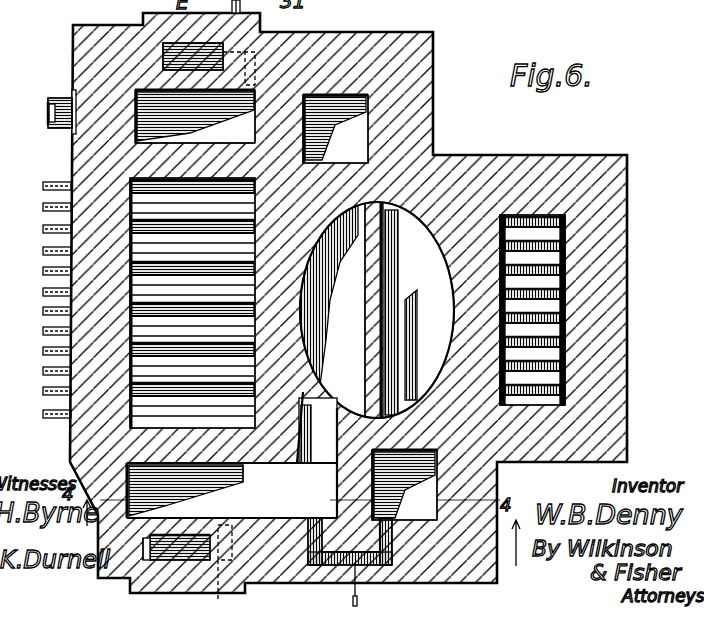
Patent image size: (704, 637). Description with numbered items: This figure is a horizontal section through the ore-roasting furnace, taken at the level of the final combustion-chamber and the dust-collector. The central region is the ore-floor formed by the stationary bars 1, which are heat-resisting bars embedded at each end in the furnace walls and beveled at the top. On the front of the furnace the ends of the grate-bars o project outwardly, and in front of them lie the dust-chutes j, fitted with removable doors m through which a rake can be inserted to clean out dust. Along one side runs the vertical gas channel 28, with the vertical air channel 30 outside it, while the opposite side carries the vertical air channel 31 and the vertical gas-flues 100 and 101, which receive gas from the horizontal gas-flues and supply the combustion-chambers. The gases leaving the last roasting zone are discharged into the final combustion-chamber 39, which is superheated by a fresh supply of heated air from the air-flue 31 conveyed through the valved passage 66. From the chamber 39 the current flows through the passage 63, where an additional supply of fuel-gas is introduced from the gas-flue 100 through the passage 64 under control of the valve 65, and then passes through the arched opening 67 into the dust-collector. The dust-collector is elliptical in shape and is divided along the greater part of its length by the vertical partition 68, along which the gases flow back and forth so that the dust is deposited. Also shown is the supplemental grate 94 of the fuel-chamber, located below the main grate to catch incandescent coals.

The stationary bars 1 is at (153, 250).
The vertical gas channel 28 is at (135, 97).
The vertical air channel 30 is at (167, 46).
The vertical air channel 31 is at (172, 553).
The final combustion-chamber 39 is at (224, 547).
The passage 63 is at (278, 491).
The passage 64 is at (395, 566).
The valve 65 is at (350, 567).
The valved passage 66 is at (130, 580).
The arched opening 67 is at (320, 410).
The vertical partition 68 is at (368, 278).
The supplemental grate 94 is at (548, 250).
The vertical gas-flue 100 is at (404, 485).
The vertical gas-flue 101 is at (335, 129).
The dust-chutes j is at (49, 101).
The removable doors m is at (51, 117).
The ends of the grate-bars o is at (46, 206).